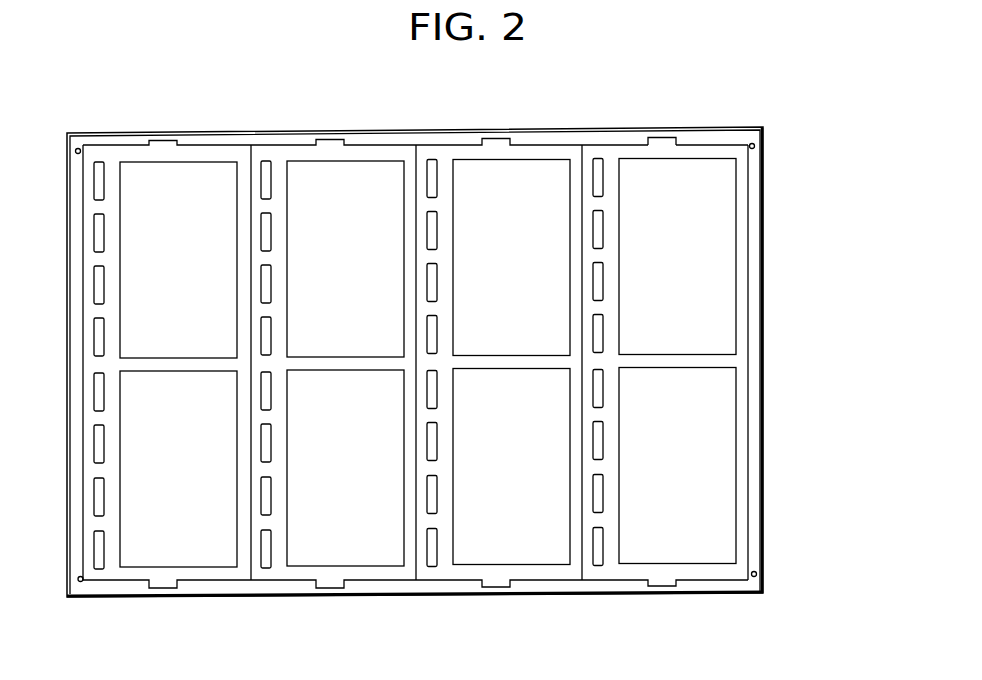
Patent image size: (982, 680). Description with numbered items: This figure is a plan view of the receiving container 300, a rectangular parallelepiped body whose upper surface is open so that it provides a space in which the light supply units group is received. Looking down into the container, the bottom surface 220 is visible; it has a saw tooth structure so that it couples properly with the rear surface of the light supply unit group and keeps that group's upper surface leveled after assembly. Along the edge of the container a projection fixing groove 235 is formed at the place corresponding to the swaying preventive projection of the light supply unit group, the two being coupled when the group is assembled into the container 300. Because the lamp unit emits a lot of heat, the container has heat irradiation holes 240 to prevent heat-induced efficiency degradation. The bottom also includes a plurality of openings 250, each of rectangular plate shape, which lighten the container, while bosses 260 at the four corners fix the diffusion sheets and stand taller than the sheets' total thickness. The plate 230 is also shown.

The receiving container 300 is at (798, 210).
The base plate 230 is at (735, 133).
The projection fixing groove 235 is at (738, 112).
The heat irradiation hole 240 is at (100, 177).
The opening 250 is at (208, 268).
The bottom surface 220 is at (283, 539).
The boss 260 is at (756, 574).